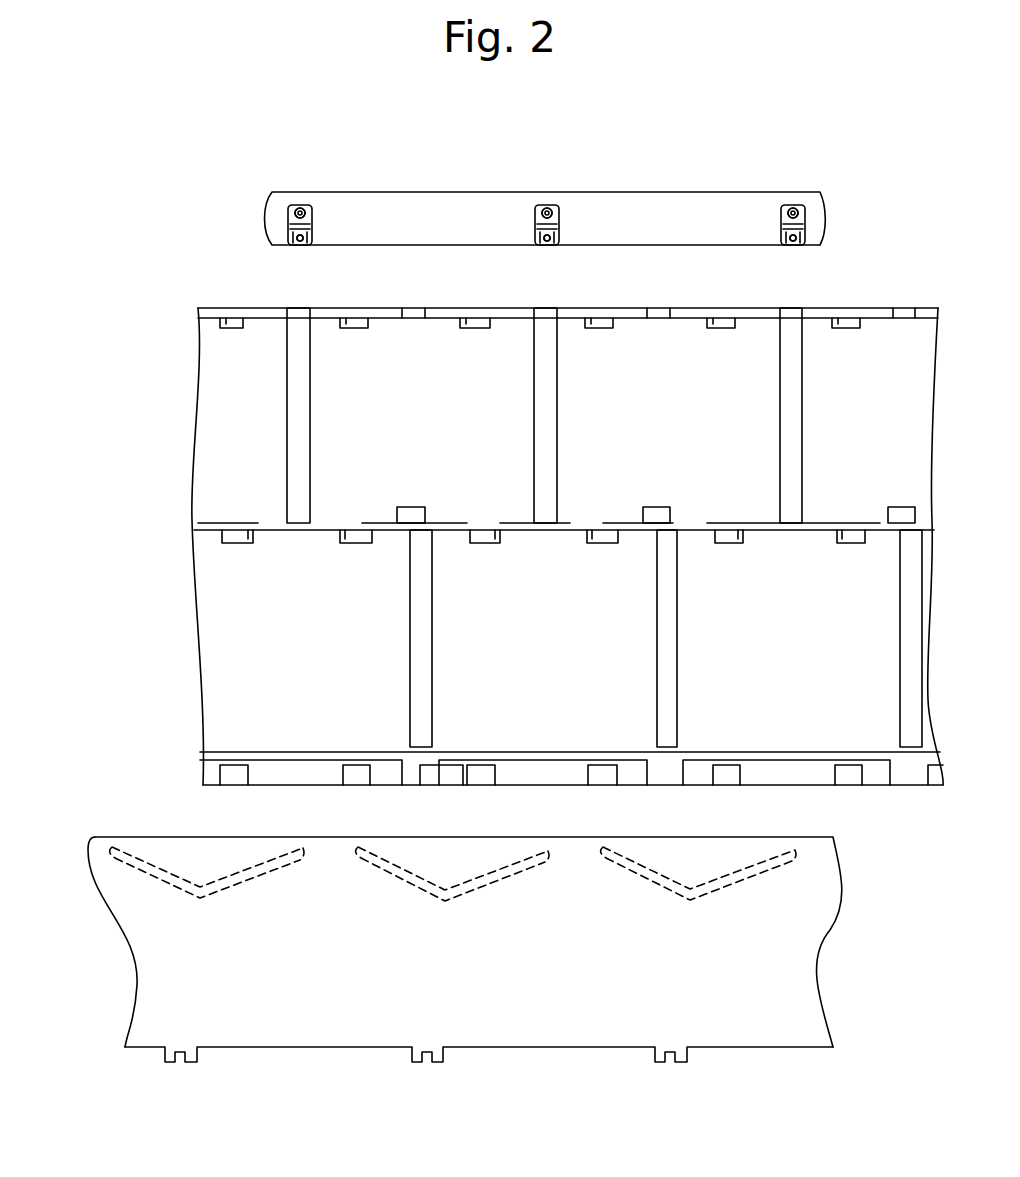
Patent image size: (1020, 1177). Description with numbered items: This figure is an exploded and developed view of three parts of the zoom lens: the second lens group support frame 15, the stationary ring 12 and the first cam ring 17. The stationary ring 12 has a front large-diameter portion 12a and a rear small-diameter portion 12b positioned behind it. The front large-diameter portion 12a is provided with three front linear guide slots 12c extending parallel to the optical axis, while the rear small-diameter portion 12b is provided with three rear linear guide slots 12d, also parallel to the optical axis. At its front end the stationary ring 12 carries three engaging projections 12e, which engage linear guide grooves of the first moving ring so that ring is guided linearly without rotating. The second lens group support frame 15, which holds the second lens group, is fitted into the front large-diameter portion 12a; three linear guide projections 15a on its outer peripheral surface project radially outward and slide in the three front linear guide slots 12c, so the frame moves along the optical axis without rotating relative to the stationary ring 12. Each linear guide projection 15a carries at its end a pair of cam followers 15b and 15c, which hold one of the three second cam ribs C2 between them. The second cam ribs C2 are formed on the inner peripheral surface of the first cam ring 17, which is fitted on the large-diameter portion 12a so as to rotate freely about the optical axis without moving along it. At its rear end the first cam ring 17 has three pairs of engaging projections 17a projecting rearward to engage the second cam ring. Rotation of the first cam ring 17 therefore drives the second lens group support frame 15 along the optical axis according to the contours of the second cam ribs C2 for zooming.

The stationary ring 12 is at (142, 405).
The front large-diameter portion 12a is at (210, 450).
The rear small-diameter portion 12b is at (207, 598).
The front linear guide slots 12c is at (310, 388).
The rear linear guide slots 12d is at (657, 654).
The engaging projections 12e is at (408, 318).
The second lens group support frame 15 is at (623, 207).
The linear guide projections 15a is at (531, 226).
The cam follower 15b is at (548, 205).
The cam follower 15c is at (545, 243).
The first cam ring 17 is at (787, 957).
The engaging projections 17a is at (197, 1062).
The second cam ribs C2 is at (230, 888).